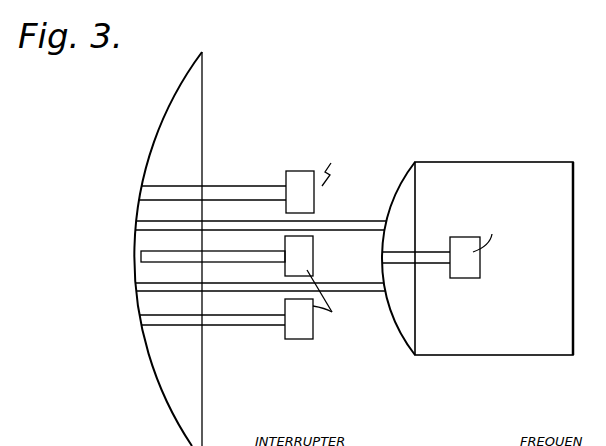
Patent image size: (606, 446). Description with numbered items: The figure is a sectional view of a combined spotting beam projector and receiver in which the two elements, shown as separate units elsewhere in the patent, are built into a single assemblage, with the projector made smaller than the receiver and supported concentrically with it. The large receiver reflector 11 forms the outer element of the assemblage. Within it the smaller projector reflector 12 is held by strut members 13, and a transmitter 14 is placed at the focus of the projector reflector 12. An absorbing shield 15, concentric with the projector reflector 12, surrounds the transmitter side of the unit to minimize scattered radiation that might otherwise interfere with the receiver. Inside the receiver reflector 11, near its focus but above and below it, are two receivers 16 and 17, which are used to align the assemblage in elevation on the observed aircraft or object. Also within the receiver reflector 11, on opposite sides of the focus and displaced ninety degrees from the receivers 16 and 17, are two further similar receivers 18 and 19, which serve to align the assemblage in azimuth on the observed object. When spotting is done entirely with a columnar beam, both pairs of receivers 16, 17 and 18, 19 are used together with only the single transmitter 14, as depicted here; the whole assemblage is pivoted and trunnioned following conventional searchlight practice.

The receiver reflector 11 is at (164, 117).
The projector reflector 12 is at (398, 195).
The strut members 13 is at (356, 220).
The transmitter 14 is at (472, 278).
The absorbing shield 15 is at (518, 162).
The receiver 16 is at (286, 172).
The receiver 17 is at (298, 333).
The receiver 18 is at (317, 240).
The receiver 19 is at (317, 263).